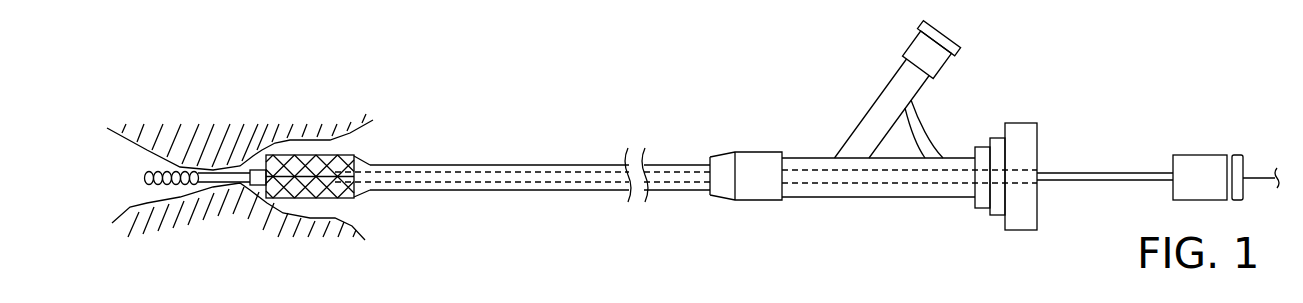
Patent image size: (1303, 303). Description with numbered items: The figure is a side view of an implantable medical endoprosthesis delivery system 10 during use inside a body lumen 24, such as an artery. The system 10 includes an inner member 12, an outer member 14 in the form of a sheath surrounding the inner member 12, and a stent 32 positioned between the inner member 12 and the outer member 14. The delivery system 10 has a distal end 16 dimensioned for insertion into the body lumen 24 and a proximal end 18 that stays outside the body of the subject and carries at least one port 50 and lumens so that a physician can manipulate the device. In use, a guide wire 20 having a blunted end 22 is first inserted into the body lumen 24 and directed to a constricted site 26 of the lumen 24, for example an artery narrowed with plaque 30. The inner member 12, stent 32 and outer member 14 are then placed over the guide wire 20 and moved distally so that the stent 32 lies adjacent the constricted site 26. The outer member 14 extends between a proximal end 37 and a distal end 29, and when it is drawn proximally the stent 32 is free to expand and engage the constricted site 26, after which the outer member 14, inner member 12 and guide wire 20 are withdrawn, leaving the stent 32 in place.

The implantable medical endoprosthesis delivery system 10 is at (768, 162).
The inner member 12 is at (448, 165).
The outer member 14 is at (553, 165).
The distal end 16 is at (374, 129).
The proximal end 18 is at (899, 162).
The guide wire 20 is at (1254, 174).
The blunted end 22 is at (144, 178).
The body lumen 24 is at (228, 187).
The constricted site 26 is at (227, 167).
The distal end 29 is at (266, 158).
The lesion 30 is at (240, 182).
The stent 32 is at (332, 197).
The proximal end 37 is at (710, 192).
The port 50 is at (963, 50).